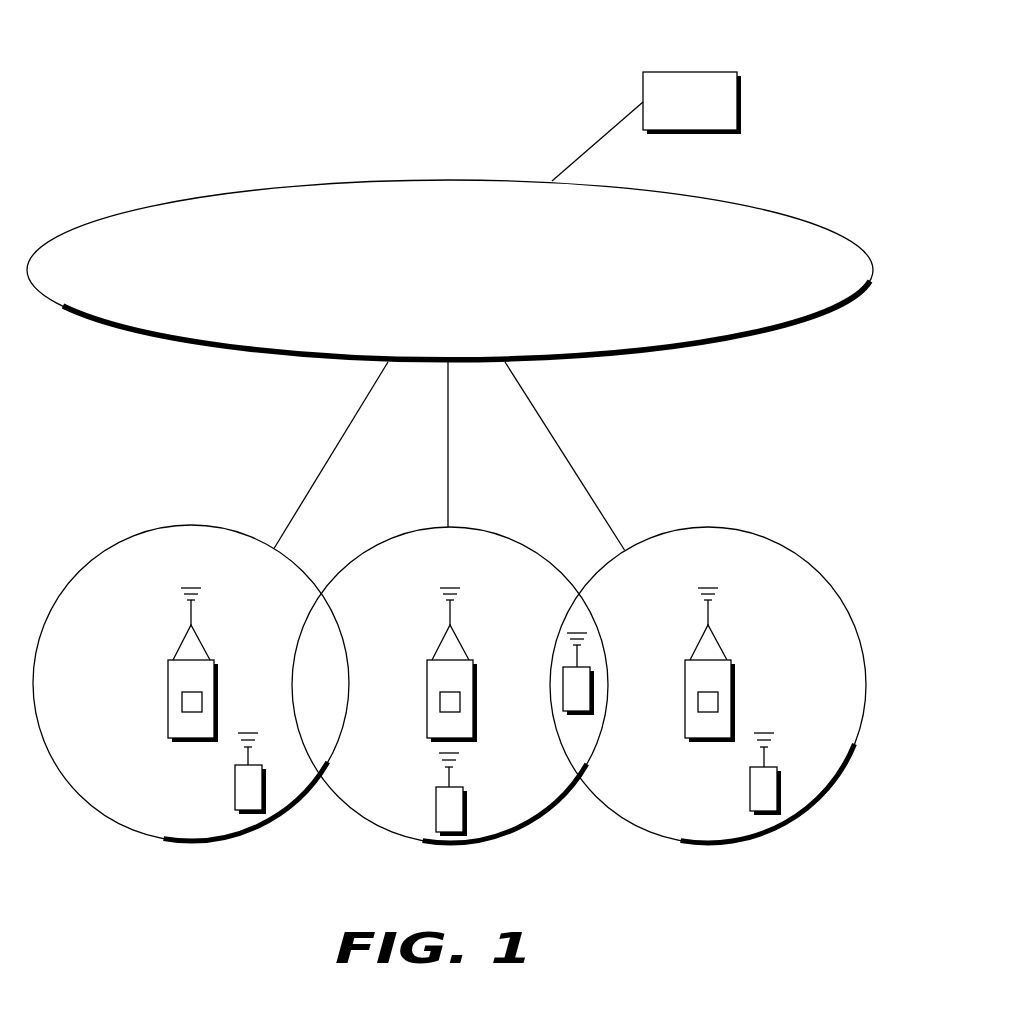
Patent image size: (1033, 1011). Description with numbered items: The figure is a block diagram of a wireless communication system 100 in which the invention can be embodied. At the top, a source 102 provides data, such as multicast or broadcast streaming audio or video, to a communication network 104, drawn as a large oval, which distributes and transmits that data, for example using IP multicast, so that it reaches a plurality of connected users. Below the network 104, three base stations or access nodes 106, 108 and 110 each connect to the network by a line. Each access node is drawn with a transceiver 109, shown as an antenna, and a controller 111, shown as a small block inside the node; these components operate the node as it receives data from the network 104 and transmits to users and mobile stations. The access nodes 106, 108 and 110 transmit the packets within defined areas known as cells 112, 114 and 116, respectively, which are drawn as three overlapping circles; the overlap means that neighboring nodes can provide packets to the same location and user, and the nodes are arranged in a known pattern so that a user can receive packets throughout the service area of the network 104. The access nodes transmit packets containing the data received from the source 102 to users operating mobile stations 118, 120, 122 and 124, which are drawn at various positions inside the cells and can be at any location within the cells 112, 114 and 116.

The communication system 100 is at (462, 25).
The source 102 is at (692, 72).
The communication network 104 is at (742, 205).
The access node 106 is at (218, 684).
The access node 108 is at (477, 684).
The transceiver 109 is at (193, 610).
The access node 110 is at (735, 684).
The controller 111 is at (193, 702).
The cell 112 is at (204, 571).
The cell 114 is at (463, 571).
The cell 116 is at (721, 571).
The mobile station 118 is at (235, 787).
The mobile station 120 is at (436, 806).
The mobile station 122 is at (595, 681).
The mobile station 124 is at (750, 787).